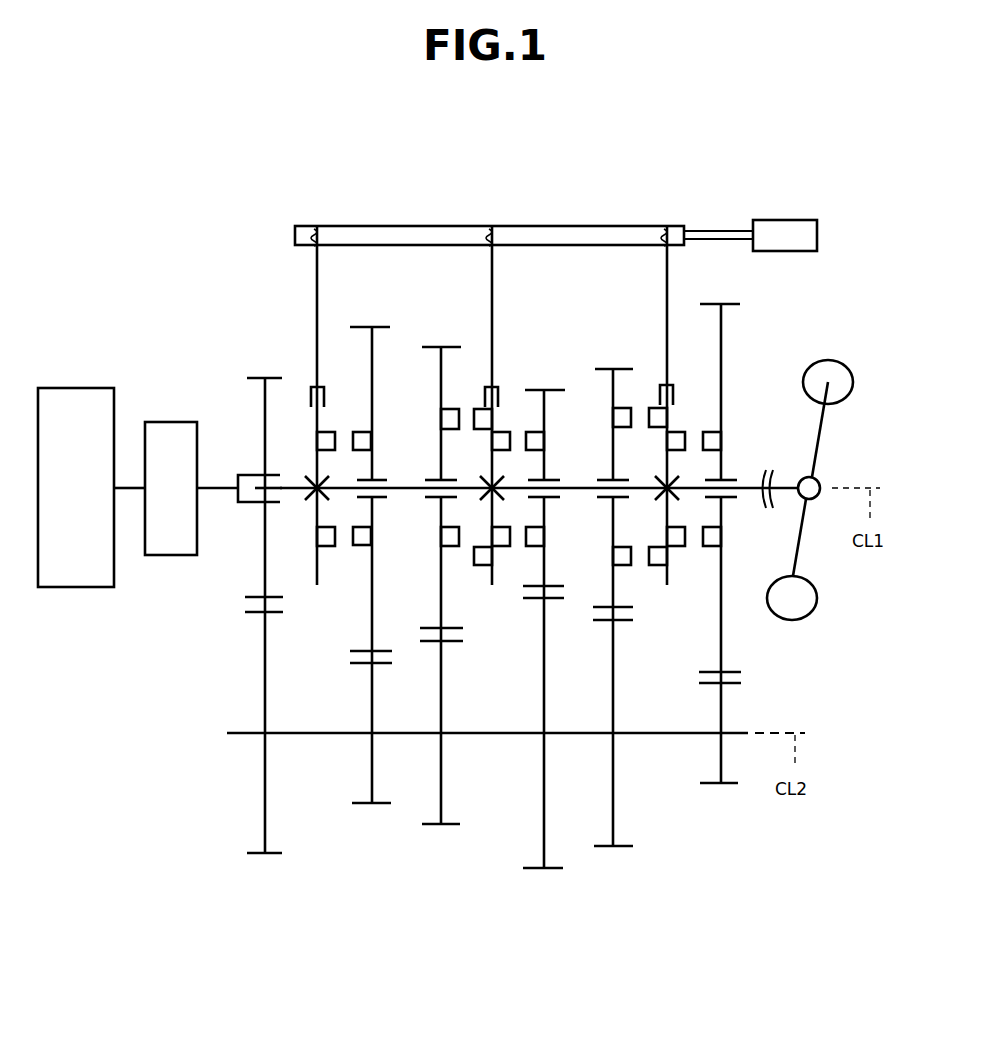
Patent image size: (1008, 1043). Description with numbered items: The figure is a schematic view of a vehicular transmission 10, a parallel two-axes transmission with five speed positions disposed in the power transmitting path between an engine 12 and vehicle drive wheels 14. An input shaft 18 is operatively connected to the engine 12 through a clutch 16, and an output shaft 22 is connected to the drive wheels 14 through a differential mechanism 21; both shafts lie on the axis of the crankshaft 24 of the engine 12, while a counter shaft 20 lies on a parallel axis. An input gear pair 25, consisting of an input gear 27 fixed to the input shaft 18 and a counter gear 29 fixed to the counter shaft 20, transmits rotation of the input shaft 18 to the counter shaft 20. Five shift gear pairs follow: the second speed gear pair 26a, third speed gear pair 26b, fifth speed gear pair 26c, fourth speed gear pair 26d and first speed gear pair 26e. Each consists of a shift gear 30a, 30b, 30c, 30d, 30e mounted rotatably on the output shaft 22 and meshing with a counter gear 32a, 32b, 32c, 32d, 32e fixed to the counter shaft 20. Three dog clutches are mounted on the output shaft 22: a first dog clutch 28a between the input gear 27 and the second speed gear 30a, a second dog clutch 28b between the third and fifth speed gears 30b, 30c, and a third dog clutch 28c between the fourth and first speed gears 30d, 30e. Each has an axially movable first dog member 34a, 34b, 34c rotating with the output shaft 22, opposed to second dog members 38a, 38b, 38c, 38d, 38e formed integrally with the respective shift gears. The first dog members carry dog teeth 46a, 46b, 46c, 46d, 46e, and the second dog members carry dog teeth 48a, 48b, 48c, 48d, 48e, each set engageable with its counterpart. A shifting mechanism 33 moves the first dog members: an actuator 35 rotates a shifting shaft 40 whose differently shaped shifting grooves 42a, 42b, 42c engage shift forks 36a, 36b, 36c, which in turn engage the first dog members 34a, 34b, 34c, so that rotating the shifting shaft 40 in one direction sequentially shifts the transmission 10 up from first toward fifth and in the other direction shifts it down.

The vehicular transmission 10 is at (170, 190).
The engine 12 is at (81, 400).
The vehicle drive wheels 14 is at (828, 376).
The clutch 16 is at (172, 556).
The input shaft 18 is at (219, 491).
The counter shaft 20 is at (239, 735).
The differential mechanism 21 is at (804, 478).
The output shaft 22 is at (749, 482).
The crankshaft 24 is at (131, 484).
The input gear pair 25 is at (264, 870).
The second speed gear pair 26a is at (370, 820).
The third speed gear pair 26b is at (442, 838).
The fifth speed gear pair 26c is at (548, 888).
The fourth speed gear pair 26d is at (618, 872).
The first speed gear pair 26e is at (723, 803).
The input gear 27 is at (262, 377).
The first dog clutch 28a is at (320, 596).
The second dog clutch 28b is at (498, 593).
The third dog clutch 28c is at (667, 593).
The counter gear 29 is at (250, 855).
The second speed gear 30a is at (371, 326).
The third speed gear 30b is at (441, 345).
The fifth speed gear 30c is at (543, 387).
The fourth speed gear 30d is at (613, 366).
The first speed gear 30e is at (719, 302).
The second speed counter gear 32a is at (360, 807).
The third speed counter gear 32b is at (452, 827).
The fifth speed counter gear 32c is at (537, 875).
The fourth speed counter gear 32d is at (618, 848).
The first speed counter gear 32e is at (727, 787).
The shifting mechanism 33 is at (468, 188).
The first dog member 34a is at (312, 436).
The first dog member 34b is at (482, 405).
The first dog member 34c is at (687, 413).
The actuator 35 is at (786, 234).
The shift fork 36a is at (316, 329).
The shift fork 36b is at (493, 312).
The shift fork 36c is at (665, 309).
The second dog member 38a is at (356, 558).
The second dog member 38b is at (428, 563).
The second dog member 38c is at (555, 528).
The second dog member 38d is at (599, 407).
The second dog member 38e is at (728, 532).
The shifting shaft 40 is at (598, 236).
The shifting groove 42a is at (320, 234).
The shifting groove 42b is at (494, 234).
The shifting groove 42c is at (664, 234).
The dog teeth 46a is at (328, 439).
The dog teeth 46b is at (480, 552).
The dog teeth 46c is at (500, 440).
The dog teeth 46d is at (658, 423).
The dog teeth 46e is at (677, 541).
The dog teeth 48a is at (371, 440).
The dog teeth 48b is at (447, 421).
The dog teeth 48c is at (541, 440).
The dog teeth 48d is at (616, 418).
The dog teeth 48e is at (720, 437).